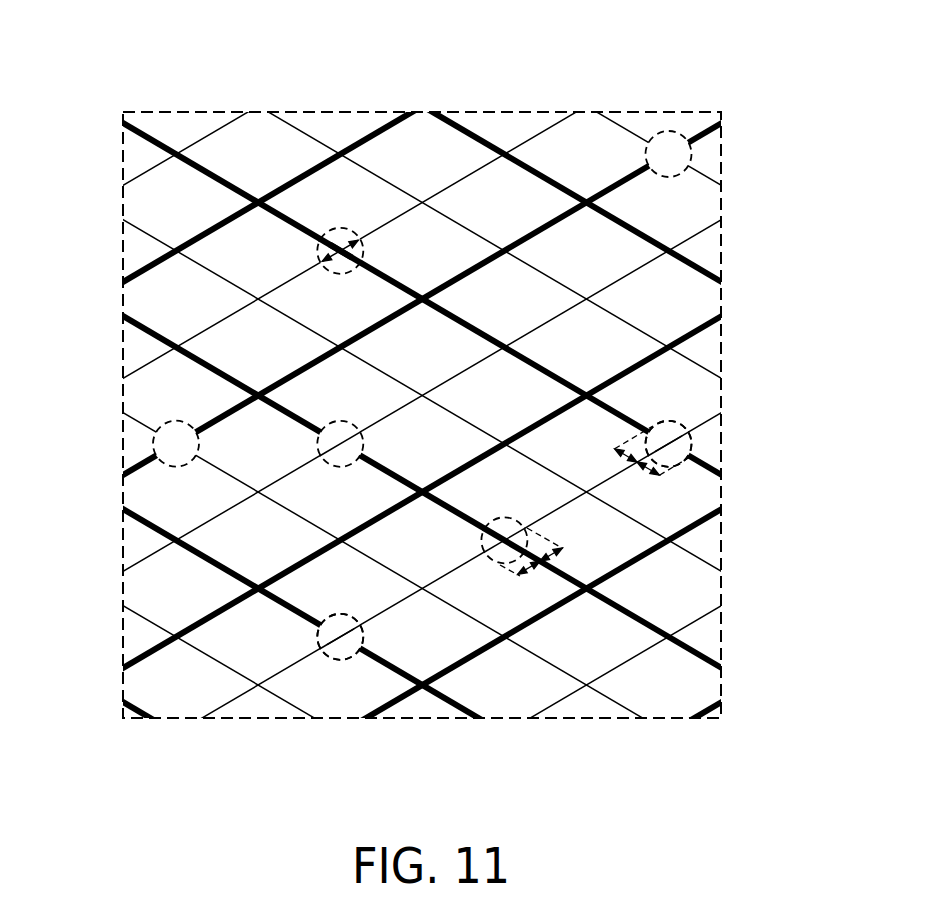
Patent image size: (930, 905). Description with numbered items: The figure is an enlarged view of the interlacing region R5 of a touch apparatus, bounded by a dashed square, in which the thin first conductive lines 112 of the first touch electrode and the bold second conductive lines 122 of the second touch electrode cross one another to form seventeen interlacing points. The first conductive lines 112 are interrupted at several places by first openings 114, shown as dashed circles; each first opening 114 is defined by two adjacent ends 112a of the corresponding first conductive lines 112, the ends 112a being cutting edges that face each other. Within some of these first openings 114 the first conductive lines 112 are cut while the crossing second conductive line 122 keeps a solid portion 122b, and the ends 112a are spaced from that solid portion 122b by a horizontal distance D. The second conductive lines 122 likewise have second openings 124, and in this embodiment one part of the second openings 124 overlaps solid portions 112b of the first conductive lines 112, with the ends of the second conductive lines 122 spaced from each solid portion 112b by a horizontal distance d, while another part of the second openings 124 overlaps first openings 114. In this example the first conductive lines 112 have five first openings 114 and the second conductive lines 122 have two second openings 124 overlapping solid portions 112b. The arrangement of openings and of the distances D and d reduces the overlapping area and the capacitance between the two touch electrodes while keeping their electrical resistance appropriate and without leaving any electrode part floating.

The interlacing region R5 is at (687, 110).
The first conductive lines 112 is at (623, 126).
The end of first conductive line 112a is at (356, 240).
The solid portion of first conductive line 112b is at (672, 422).
The first openings 114 is at (692, 150).
The second conductive lines 122 is at (300, 178).
The solid portion of second conductive line 122b is at (352, 262).
The second openings 124 is at (690, 448).
The horizontal distance D is at (540, 563).
The horizontal distance d is at (641, 465).